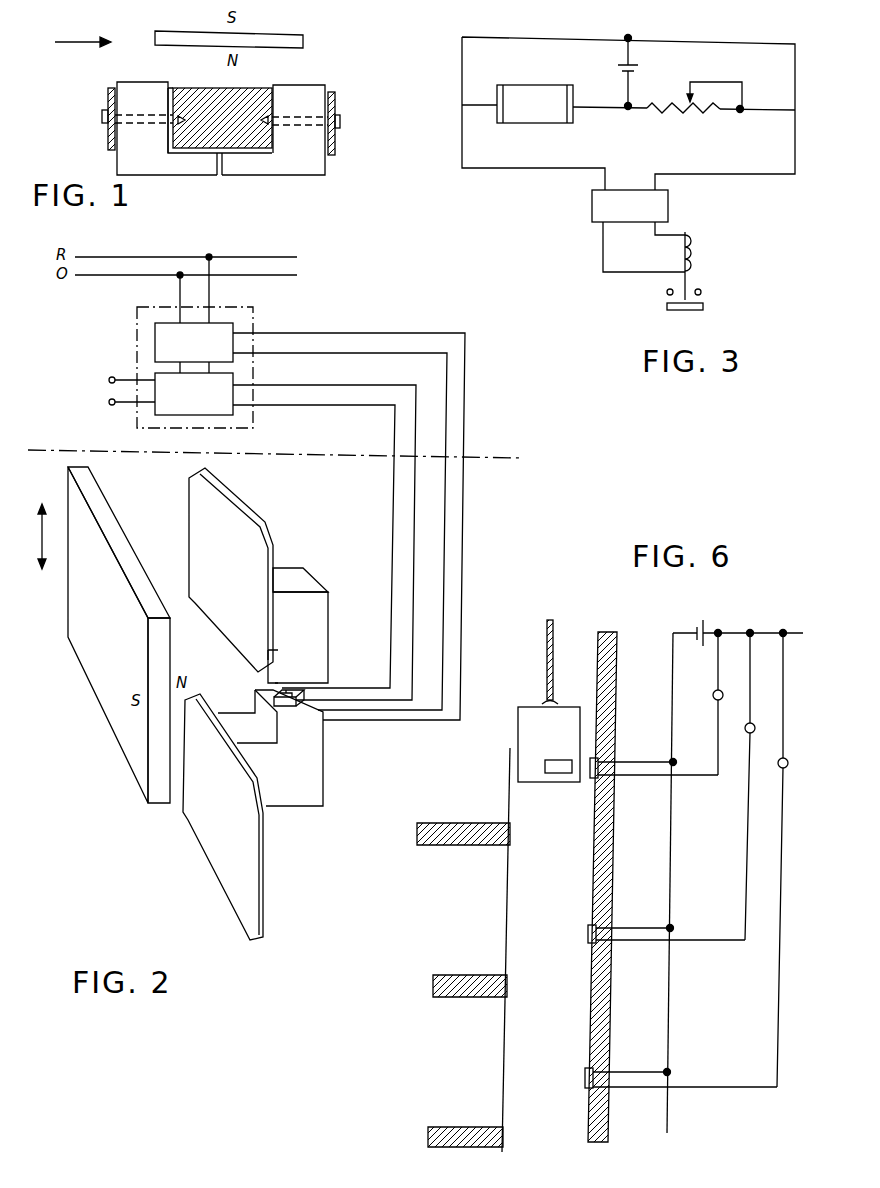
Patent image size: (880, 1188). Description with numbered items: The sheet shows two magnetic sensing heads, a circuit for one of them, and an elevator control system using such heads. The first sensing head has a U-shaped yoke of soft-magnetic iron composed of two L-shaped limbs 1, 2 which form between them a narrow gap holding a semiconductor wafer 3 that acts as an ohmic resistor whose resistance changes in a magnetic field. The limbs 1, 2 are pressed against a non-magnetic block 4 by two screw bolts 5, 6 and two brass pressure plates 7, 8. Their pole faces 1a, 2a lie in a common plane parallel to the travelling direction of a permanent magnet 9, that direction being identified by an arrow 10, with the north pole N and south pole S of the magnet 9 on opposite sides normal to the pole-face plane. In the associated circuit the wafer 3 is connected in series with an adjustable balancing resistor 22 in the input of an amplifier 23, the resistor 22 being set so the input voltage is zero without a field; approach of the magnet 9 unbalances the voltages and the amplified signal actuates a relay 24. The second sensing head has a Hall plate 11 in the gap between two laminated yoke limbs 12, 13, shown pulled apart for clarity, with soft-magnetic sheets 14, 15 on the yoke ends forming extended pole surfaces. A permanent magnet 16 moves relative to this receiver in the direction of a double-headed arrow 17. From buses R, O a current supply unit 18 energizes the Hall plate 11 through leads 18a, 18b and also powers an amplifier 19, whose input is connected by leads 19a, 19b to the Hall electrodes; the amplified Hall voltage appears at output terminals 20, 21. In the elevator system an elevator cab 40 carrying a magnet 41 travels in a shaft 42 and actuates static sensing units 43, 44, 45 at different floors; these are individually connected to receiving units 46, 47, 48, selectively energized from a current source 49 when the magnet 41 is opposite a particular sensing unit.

In FIG. 1, the L-shaped limb 1 is at (167, 131).
In FIG. 1, the pole face 1a is at (125, 90).
In FIG. 1, the L-shaped limb 2 is at (273, 135).
In FIG. 1, the pole face 2a is at (281, 92).
In FIG. 1, the semiconductor wafer 3 is at (220, 176).
In FIG. 3, the semiconductor wafer 3 is at (522, 91).
In FIG. 1, the non-magnetic block 4 is at (180, 96).
In FIG. 1, the screw bolt 5 is at (102, 115).
In FIG. 1, the screw bolt 6 is at (340, 121).
In FIG. 1, the pressure plate 7 is at (108, 145).
In FIG. 1, the pressure plate 8 is at (335, 150).
In FIG. 1, the permanent magnet 9 is at (303, 41).
In FIG. 1, the arrow 10 is at (62, 42).
In FIG. 2, the Hall plate 11 is at (268, 693).
In FIG. 2, the limb 12 is at (327, 626).
In FIG. 2, the limb 13 is at (322, 770).
In FIG. 2, the soft-magnetic sheet 14 is at (242, 510).
In FIG. 2, the soft-magnetic sheet 15 is at (257, 882).
In FIG. 2, the permanent magnet 16 is at (103, 708).
In FIG. 2, the double-headed arrow 17 is at (42, 526).
In FIG. 2, the current supply unit 18 is at (194, 342).
In FIG. 2, the lead 18a is at (445, 574).
In FIG. 2, the lead 18b is at (461, 612).
In FIG. 2, the amplifier 19 is at (194, 394).
In FIG. 2, the lead 19a is at (394, 511).
In FIG. 2, the lead 19b is at (417, 497).
In FIG. 2, the amplifier output terminal 20 is at (119, 380).
In FIG. 2, the amplifier output terminal 21 is at (119, 402).
In FIG. 3, the adjustable balancing resistor 22 is at (683, 118).
In FIG. 3, the amplifier 23 is at (592, 208).
In FIG. 3, the relay 24 is at (692, 254).
In FIG. 6, the elevator cab 40 is at (524, 728).
In FIG. 6, the magnet 41 is at (548, 773).
In FIG. 6, the shaft 42 is at (573, 887).
In FIG. 6, the static sensing unit 43 is at (590, 776).
In FIG. 6, the static sensing unit 44 is at (588, 938).
In FIG. 6, the static sensing unit 45 is at (585, 1080).
In FIG. 6, the receiving unit 46 is at (714, 693).
In FIG. 6, the receiving unit 47 is at (755, 729).
In FIG. 6, the receiving unit 48 is at (788, 762).
In FIG. 6, the current source 49 is at (700, 620).